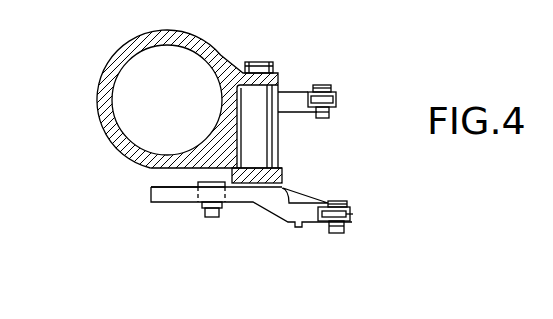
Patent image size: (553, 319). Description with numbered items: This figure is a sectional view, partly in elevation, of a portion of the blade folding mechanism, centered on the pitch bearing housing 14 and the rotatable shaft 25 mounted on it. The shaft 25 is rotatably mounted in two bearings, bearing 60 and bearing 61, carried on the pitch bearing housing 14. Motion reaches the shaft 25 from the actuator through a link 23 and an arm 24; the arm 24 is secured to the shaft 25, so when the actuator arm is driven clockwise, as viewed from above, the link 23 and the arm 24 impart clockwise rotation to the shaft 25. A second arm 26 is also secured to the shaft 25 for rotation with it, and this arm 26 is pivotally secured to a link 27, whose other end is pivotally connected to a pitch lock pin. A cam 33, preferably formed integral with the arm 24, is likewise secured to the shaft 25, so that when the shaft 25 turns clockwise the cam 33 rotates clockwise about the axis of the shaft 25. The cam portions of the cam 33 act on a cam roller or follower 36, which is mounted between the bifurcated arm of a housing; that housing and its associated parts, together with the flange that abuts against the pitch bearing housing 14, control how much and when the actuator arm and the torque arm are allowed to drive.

The pitch bearing housing 14 is at (97, 100).
The bearing 60 is at (277, 82).
The link 27 is at (336, 102).
The second arm 26 is at (310, 116).
The shaft 25 is at (279, 142).
The bearing 61 is at (283, 177).
The cam 33 is at (163, 183).
The cam roller or follower 36 is at (200, 203).
The arm 24 is at (295, 225).
The link 23 is at (353, 215).